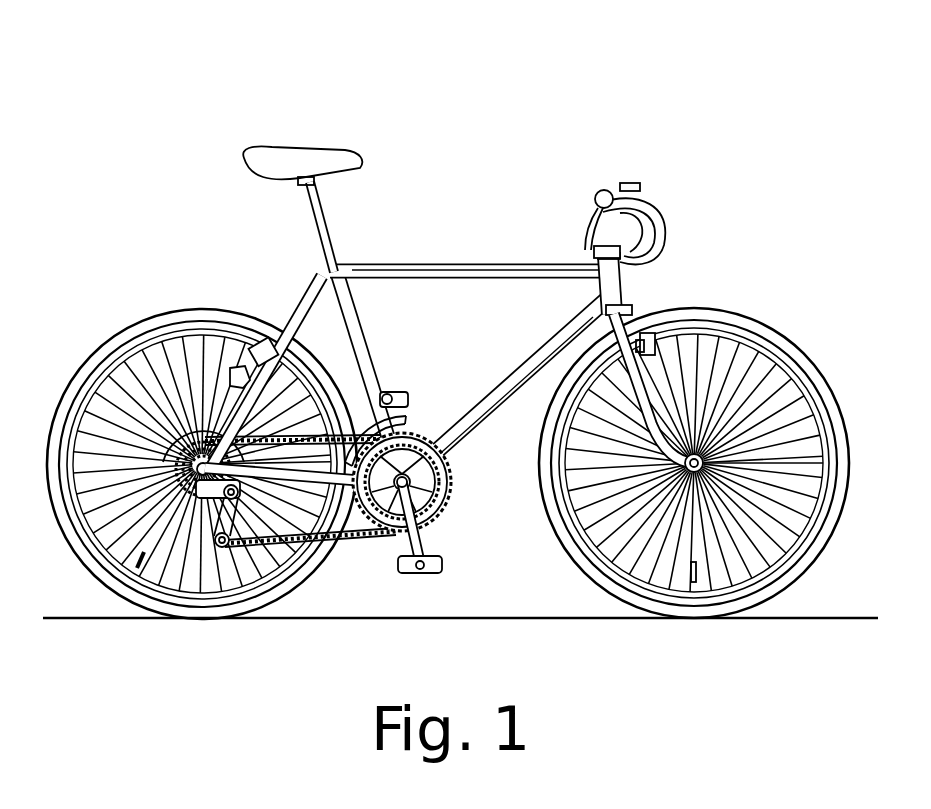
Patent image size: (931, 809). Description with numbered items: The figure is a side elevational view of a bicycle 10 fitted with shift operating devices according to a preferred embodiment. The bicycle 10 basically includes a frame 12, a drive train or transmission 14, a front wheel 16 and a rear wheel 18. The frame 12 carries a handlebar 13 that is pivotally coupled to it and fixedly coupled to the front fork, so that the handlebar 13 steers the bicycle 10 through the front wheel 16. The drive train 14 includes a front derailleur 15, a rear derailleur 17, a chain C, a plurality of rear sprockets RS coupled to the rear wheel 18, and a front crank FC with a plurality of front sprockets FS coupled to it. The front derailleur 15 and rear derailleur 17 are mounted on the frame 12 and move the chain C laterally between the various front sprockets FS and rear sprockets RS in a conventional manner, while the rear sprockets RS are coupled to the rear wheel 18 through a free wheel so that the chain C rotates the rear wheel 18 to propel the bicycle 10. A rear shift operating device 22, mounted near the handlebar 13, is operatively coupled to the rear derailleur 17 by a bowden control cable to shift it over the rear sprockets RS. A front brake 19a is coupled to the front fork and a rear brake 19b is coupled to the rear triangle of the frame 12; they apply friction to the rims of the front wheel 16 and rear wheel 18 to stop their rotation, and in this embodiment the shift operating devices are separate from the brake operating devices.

The bicycle 10 is at (605, 122).
The frame 12 is at (427, 280).
The handlebar 13 is at (598, 196).
The drive train 14 is at (458, 503).
The front derailleur 15 is at (403, 410).
The front wheel 16 is at (776, 330).
The rear derailleur 17 is at (213, 532).
The rear wheel 18 is at (150, 318).
The front brake 19a is at (650, 335).
The rear brake 19b is at (262, 340).
The rear shift operating device 22 is at (640, 186).
The rear sprockets RS is at (240, 468).
The front sprockets FS is at (458, 478).
The front crank FC is at (438, 545).
The chain C is at (366, 538).